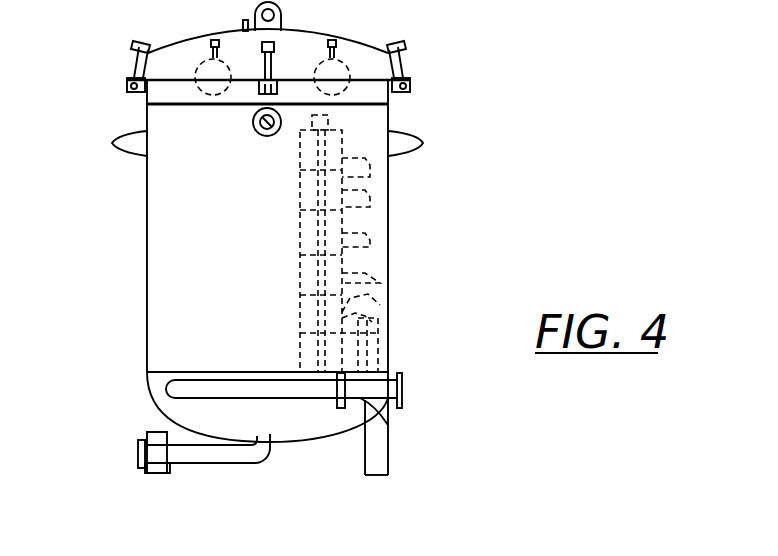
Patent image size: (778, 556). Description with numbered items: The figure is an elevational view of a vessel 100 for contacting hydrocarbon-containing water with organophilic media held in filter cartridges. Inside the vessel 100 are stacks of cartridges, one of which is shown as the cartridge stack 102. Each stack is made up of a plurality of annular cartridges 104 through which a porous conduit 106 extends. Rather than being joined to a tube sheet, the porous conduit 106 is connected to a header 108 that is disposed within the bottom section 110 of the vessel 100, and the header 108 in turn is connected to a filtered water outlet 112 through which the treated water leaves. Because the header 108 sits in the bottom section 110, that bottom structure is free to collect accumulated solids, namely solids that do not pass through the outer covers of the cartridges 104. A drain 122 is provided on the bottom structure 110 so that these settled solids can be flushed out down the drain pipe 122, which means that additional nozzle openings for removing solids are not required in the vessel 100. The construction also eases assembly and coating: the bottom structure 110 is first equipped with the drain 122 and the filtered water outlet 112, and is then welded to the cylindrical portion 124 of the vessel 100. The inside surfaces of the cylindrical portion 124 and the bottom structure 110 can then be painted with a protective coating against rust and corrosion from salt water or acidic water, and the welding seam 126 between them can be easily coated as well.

The vessel 100 is at (325, 267).
The cartridge stack 102 is at (331, 243).
The annular cartridges 104 is at (370, 176).
The porous conduit 106 is at (318, 219).
The header 108 is at (305, 408).
The bottom section 110 is at (290, 438).
The filtered water outlet 112 is at (365, 428).
The drain 122 is at (207, 463).
The cylindrical portion 124 is at (146, 300).
The welding seam 126 is at (147, 372).